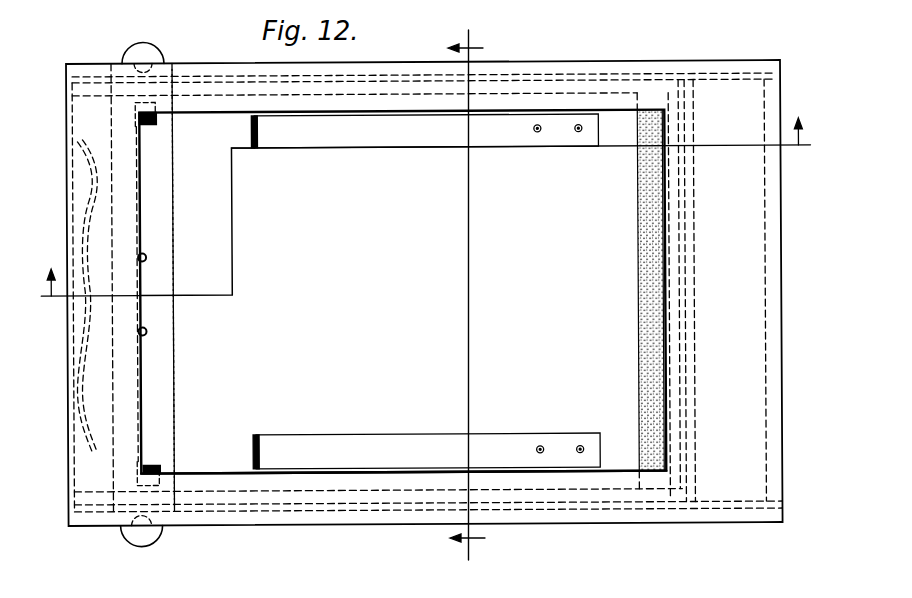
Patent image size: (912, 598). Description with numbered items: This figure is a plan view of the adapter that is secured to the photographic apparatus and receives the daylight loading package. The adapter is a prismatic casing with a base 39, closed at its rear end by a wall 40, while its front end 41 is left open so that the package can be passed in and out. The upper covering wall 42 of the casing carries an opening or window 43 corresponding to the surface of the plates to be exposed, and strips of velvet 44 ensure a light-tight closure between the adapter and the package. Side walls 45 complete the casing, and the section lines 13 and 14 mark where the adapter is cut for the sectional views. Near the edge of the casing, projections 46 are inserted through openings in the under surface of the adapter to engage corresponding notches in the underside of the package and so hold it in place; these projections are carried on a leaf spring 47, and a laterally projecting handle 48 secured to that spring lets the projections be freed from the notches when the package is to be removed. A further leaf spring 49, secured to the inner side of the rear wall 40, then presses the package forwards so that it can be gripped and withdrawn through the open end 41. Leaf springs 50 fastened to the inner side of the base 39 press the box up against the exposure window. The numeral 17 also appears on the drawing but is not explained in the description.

The section line 13- 13 is at (427, 227).
The section line 14- 14 is at (465, 298).
The panel 17 is at (160, 272).
The base 39 is at (259, 243).
The wall 40 is at (70, 528).
The front end 41 is at (780, 233).
The upper covering wall 42 is at (128, 372).
The opening or window 43 is at (305, 472).
The strips of velvet 44 is at (637, 241).
The side walls 45 is at (520, 46).
The projections 46 is at (157, 121).
The leaf spring 47 is at (172, 237).
The laterally projecting handle 48 is at (150, 50).
The leaf spring 49 is at (92, 196).
The leaf springs 50 is at (412, 146).